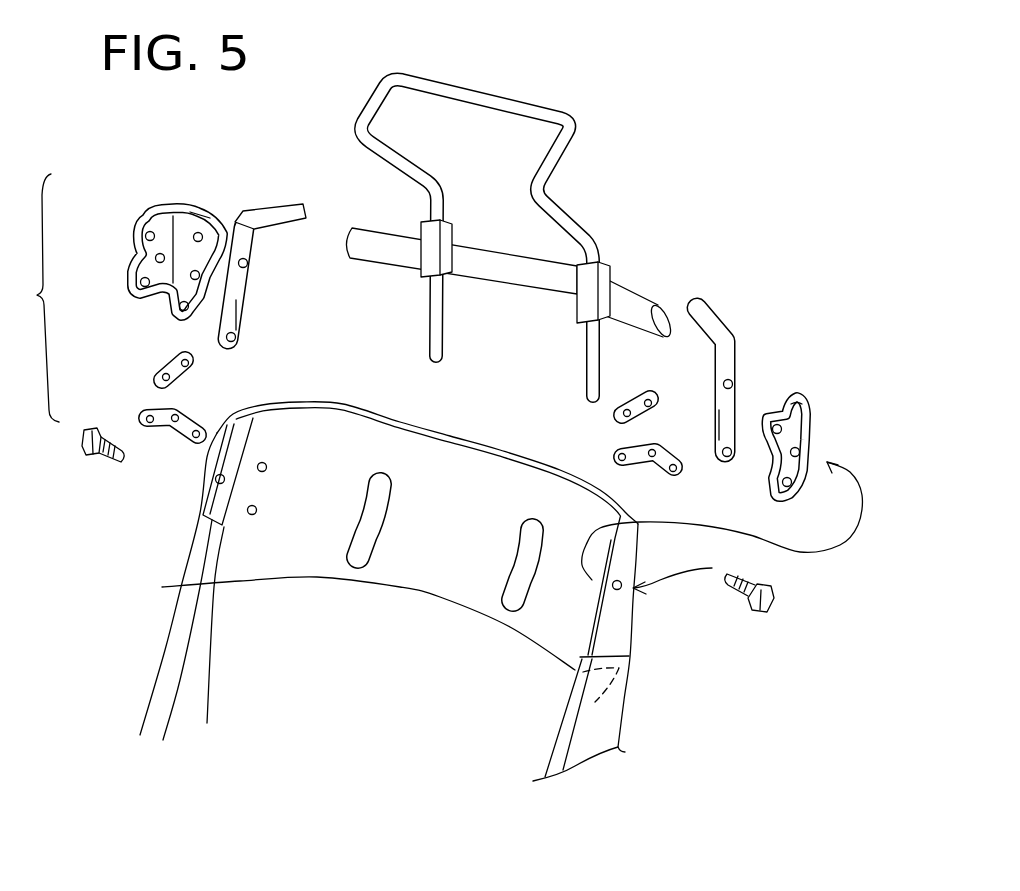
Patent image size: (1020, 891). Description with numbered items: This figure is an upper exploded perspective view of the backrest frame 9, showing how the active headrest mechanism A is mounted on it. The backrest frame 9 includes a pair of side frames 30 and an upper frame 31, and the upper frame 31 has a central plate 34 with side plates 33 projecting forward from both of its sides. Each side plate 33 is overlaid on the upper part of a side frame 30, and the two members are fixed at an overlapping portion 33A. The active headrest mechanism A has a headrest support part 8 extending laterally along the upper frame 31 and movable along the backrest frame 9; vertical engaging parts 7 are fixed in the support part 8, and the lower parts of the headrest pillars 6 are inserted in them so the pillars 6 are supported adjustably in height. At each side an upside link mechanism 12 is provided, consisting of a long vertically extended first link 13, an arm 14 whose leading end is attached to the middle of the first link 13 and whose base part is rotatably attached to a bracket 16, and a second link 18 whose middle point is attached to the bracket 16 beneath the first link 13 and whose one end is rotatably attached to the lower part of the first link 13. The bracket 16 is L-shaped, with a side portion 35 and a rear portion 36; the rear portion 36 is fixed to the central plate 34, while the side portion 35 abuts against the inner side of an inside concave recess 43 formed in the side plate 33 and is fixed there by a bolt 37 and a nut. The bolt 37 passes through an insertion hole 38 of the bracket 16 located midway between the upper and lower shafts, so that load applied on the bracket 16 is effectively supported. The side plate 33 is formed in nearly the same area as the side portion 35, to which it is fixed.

The active headrest mechanism A is at (37, 298).
The pillar 6 is at (443, 330).
The vertical engaging part 7 is at (444, 238).
The headrest support part 8 is at (532, 273).
The backrest frame 9 is at (630, 686).
The upside link mechanism 12 is at (254, 288).
The first link 13 is at (233, 218).
The arm 14 is at (183, 374).
The bracket 16 is at (190, 202).
The second link 18 is at (168, 430).
The side frame 30 is at (157, 657).
The upper frame 31 is at (410, 592).
The side plate 33 is at (202, 483).
The overlapping portion 33A is at (575, 706).
The central plate 34 is at (459, 575).
The side portion 35 is at (127, 284).
The rear portion 36 is at (200, 208).
The bolt 37 is at (82, 442).
The insertion hole 38 is at (152, 258).
The concave recess 43 is at (620, 582).